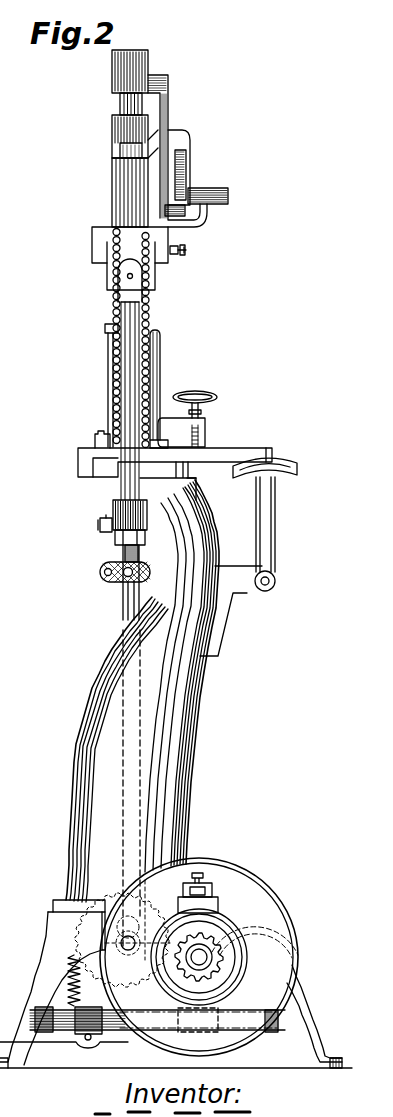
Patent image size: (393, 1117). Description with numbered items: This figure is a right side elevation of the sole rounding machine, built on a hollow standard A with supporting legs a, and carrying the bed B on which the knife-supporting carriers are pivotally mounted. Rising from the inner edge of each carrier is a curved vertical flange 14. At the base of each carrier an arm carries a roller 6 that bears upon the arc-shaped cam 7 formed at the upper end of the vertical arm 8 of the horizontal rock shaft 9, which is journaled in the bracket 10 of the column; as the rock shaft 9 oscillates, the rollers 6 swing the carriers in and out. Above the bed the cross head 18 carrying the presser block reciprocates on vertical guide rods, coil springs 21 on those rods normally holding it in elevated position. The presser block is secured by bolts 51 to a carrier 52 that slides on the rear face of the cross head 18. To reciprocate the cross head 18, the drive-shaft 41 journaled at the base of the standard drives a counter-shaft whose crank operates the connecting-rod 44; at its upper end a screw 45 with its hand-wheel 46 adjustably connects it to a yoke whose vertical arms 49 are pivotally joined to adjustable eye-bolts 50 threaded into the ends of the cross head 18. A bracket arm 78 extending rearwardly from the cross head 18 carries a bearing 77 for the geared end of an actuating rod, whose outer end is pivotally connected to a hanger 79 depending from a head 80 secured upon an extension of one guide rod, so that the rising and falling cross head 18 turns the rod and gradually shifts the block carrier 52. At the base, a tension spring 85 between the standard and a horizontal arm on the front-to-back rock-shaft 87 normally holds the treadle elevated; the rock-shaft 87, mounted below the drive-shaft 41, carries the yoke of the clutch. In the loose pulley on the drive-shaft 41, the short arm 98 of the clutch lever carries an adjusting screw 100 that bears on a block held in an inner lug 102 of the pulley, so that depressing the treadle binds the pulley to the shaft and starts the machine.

The head 80 is at (148, 62).
The hanger 79 is at (168, 110).
The cross head 18 is at (120, 131).
The bearing 77 is at (224, 183).
The bracket arm 78 is at (204, 219).
The eye-bolts 50 is at (143, 263).
The carrier 52 is at (168, 237).
The bolts 51 is at (187, 251).
The vertical arms 49 is at (133, 341).
The coil springs 21 is at (112, 359).
The vertical flange 14 is at (153, 377).
The bed B is at (175, 436).
The roller 6 is at (270, 462).
The arc-shaped cam 7 is at (298, 471).
The vertical arm 8 is at (269, 529).
The rock shaft 9 is at (275, 583).
The bracket 10 is at (228, 611).
The screw 45 is at (125, 551).
The hand-wheel 46 is at (100, 572).
The connecting-rod 44 is at (125, 596).
The standard A is at (175, 721).
The legs a is at (45, 950).
The drive-shaft 41 is at (201, 957).
The inner lug 102 is at (218, 905).
The short arm 98 is at (212, 891).
The adjusting screw 100 is at (205, 876).
The tension spring 85 is at (72, 976).
The rock-shaft 87 is at (130, 1022).